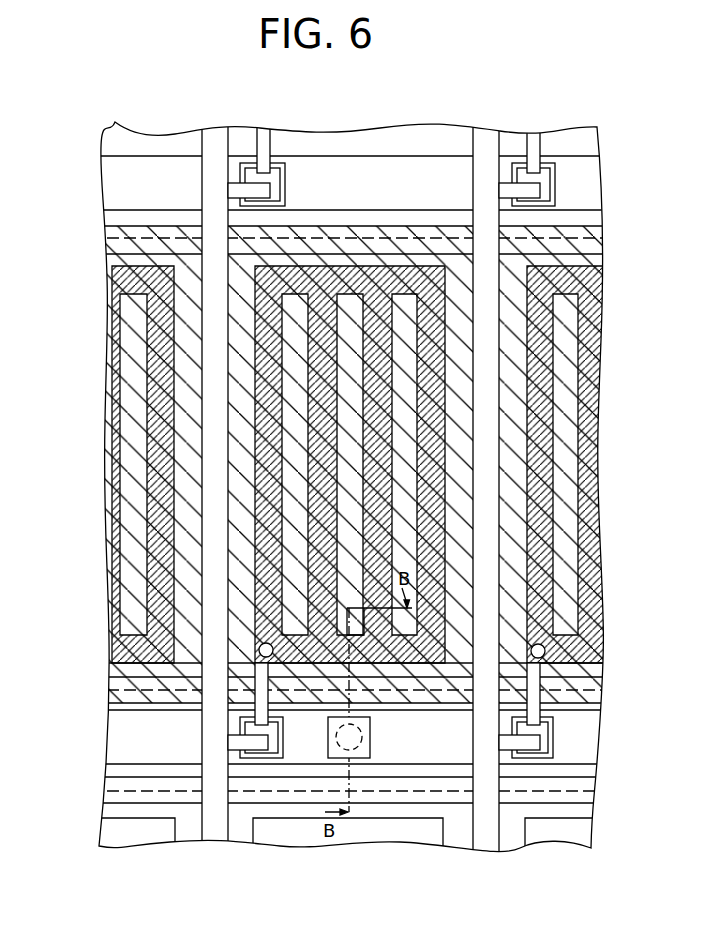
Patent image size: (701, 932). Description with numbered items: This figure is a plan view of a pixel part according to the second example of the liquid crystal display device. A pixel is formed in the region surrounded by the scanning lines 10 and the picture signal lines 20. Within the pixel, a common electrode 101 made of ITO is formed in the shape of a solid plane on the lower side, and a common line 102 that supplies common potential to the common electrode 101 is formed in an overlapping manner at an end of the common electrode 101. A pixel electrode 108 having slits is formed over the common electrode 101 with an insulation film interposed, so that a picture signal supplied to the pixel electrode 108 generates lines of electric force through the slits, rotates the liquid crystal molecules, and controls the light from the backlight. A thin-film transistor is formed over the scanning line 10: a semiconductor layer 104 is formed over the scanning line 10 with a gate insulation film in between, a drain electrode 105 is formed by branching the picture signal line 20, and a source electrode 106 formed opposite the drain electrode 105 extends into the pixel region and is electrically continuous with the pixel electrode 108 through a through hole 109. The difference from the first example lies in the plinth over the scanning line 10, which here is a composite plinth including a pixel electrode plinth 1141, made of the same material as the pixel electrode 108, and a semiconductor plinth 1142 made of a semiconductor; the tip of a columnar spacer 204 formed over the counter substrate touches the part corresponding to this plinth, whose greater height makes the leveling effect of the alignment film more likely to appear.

The scanning line 10 is at (125, 735).
The picture signal line 20 is at (215, 494).
The common electrode 101 is at (122, 663).
The common line 102 is at (122, 691).
The semiconductor layer 104 is at (277, 750).
The drain electrode 105 is at (253, 745).
The source electrode 106 is at (283, 720).
The pixel electrode 108 is at (150, 541).
The through hole 109 is at (259, 645).
The columnar spacer 204 is at (357, 750).
The pixel electrode plinth 1141 is at (370, 727).
The semiconductor plinth 1142 is at (406, 862).